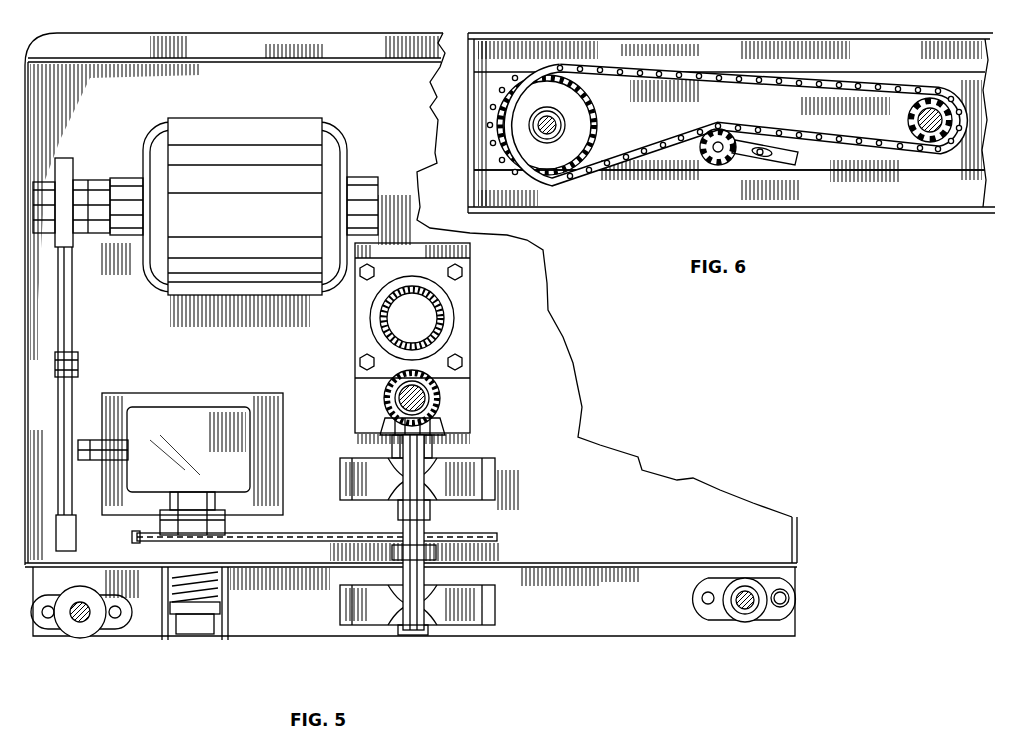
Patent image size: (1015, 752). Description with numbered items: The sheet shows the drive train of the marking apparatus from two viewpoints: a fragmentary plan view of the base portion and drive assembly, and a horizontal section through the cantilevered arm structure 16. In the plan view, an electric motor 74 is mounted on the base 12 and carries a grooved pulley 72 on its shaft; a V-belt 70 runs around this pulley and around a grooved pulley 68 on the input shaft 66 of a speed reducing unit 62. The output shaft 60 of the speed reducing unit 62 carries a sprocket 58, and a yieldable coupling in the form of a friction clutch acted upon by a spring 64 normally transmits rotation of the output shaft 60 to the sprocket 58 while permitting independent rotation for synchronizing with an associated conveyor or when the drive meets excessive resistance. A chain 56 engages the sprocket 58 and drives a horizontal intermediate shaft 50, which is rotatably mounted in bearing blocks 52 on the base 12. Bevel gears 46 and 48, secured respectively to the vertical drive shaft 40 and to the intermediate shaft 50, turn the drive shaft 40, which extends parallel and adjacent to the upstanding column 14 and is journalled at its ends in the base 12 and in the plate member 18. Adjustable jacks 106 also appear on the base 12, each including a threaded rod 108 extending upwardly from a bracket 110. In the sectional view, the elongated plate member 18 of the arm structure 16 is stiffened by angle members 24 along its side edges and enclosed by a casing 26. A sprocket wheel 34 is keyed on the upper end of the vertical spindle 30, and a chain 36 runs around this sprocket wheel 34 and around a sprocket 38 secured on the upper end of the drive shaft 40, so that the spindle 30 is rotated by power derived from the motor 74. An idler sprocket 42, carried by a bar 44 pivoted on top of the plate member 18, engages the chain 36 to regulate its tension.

In FIG. 5, the base 12 is at (578, 632).
In FIG. 5, the column 14 is at (445, 323).
In FIG. 6, the cantilevered arm structure 16 is at (731, 140).
In FIG. 6, the plate member 18 is at (828, 168).
In FIG. 6, the angle members 24 is at (690, 45).
In FIG. 6, the casing 26 is at (838, 214).
In FIG. 6, the spindle 30 is at (553, 124).
In FIG. 6, the sprocket wheel 34 is at (590, 130).
In FIG. 6, the chain 36 is at (682, 72).
In FIG. 6, the sprocket 38 is at (932, 143).
In FIG. 5, the drive shaft 40 is at (424, 400).
In FIG. 6, the drive shaft 40 is at (918, 121).
In FIG. 6, the idler sprocket 42 is at (712, 166).
In FIG. 6, the bar 44 is at (785, 163).
In FIG. 5, the bevel gear 46 is at (445, 392).
In FIG. 5, the bevel gear 48 is at (440, 426).
In FIG. 5, the intermediate shaft 50 is at (425, 527).
In FIG. 5, the bearing blocks 52 is at (470, 468).
In FIG. 5, the chain 56 is at (275, 532).
In FIG. 5, the sprocket 58 is at (137, 539).
In FIG. 5, the output shaft 60 is at (190, 497).
In FIG. 5, the speed reducing unit 62 is at (240, 468).
In FIG. 5, the spring 64 is at (215, 588).
In FIG. 5, the input shaft 66 is at (92, 442).
In FIG. 5, the grooved pulley 68 is at (79, 370).
In FIG. 5, the V-belt 70 is at (73, 320).
In FIG. 5, the grooved pulley 72 is at (75, 175).
In FIG. 5, the electric motor 74 is at (268, 124).
In FIG. 5, the adjustable jack 106 is at (118, 635).
In FIG. 5, the threaded rod 108 is at (760, 598).
In FIG. 5, the bracket 110 is at (752, 604).